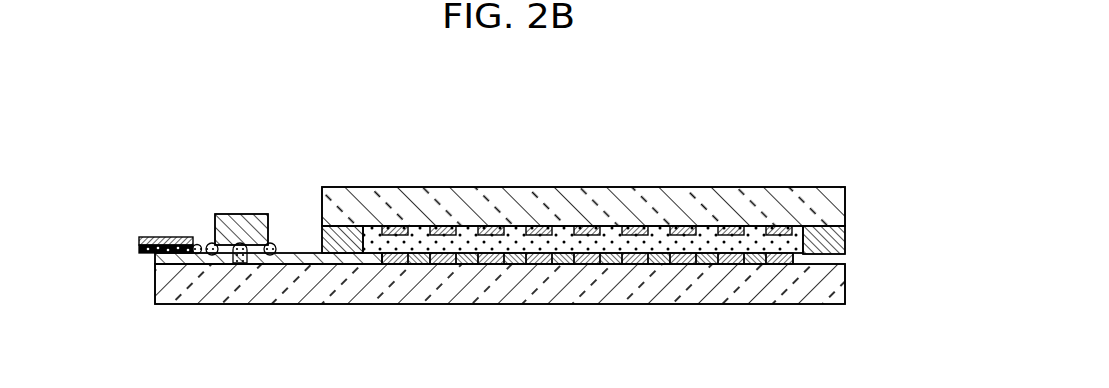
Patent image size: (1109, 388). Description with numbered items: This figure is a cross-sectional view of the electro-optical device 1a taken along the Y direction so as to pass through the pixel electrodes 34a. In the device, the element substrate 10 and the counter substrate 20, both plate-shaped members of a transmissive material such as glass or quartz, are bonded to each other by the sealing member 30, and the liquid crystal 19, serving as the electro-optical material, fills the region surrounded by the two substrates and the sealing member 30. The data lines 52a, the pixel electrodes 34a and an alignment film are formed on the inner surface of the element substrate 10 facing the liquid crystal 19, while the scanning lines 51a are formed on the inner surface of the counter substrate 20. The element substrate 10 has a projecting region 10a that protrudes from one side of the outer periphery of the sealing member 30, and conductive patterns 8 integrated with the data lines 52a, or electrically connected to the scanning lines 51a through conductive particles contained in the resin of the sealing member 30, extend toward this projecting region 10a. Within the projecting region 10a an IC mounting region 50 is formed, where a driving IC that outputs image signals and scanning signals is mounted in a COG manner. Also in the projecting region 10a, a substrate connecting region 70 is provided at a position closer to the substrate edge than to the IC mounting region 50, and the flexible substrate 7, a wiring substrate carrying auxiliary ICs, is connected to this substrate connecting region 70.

The electro-optical device 1a is at (748, 122).
The flexible substrate 7 is at (170, 238).
The substrate connecting region 70 is at (157, 263).
The conductive patterns 8 is at (479, 301).
The data lines 52a is at (337, 258).
The element substrate 10 is at (833, 287).
The projecting region 10a is at (318, 313).
The liquid crystal 19 is at (467, 238).
The counter substrate 20 is at (823, 192).
The sealing member 30 is at (340, 228).
The pixel electrodes 34a is at (540, 262).
The IC mounting region 50 is at (255, 227).
The scanning lines 51a is at (590, 233).